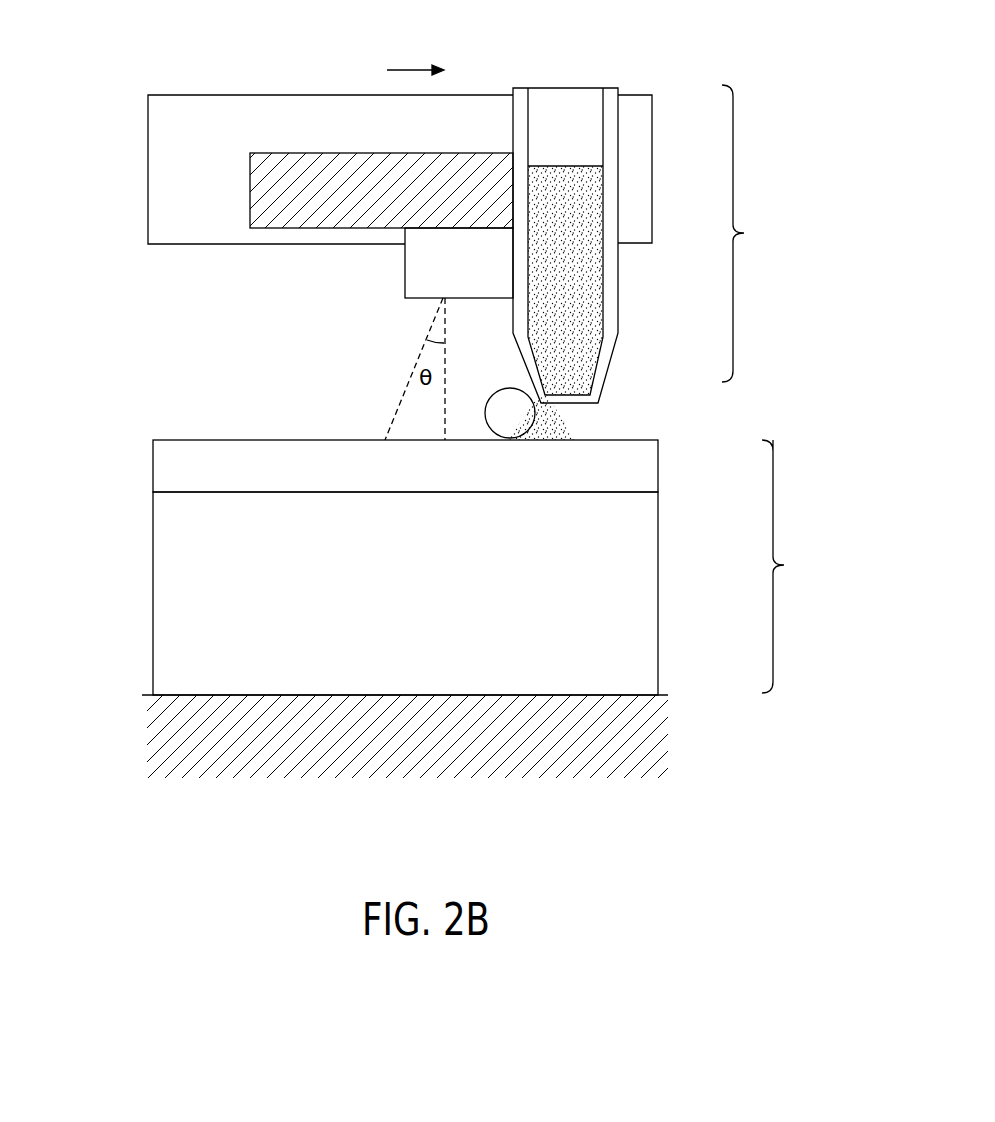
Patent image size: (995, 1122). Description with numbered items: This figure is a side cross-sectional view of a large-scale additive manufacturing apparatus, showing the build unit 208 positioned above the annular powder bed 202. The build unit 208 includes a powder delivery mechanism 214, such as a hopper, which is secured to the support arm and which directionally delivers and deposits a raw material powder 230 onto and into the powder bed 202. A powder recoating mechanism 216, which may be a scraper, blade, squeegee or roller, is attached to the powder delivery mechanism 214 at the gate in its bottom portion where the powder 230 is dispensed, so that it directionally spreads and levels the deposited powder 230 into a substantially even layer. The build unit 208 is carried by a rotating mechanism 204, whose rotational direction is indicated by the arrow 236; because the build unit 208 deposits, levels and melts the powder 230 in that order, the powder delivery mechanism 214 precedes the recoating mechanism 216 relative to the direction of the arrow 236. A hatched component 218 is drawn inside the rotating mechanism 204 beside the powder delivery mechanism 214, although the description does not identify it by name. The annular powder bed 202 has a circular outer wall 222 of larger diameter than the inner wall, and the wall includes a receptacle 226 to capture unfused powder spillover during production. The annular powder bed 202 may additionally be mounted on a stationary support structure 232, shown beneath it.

The annular powder bed 202 is at (486, 567).
The rotating mechanism 204 is at (148, 155).
The build unit 208 is at (752, 233).
The powder delivery mechanism 214 is at (608, 88).
The recoating mechanism 216 is at (502, 388).
The heating element 218 is at (250, 183).
The circular outer wall 222 is at (646, 567).
The receptacle 226 is at (646, 473).
The raw material powder 230 is at (585, 300).
The stationary support structure 232 is at (655, 736).
The arrow 236 is at (407, 68).